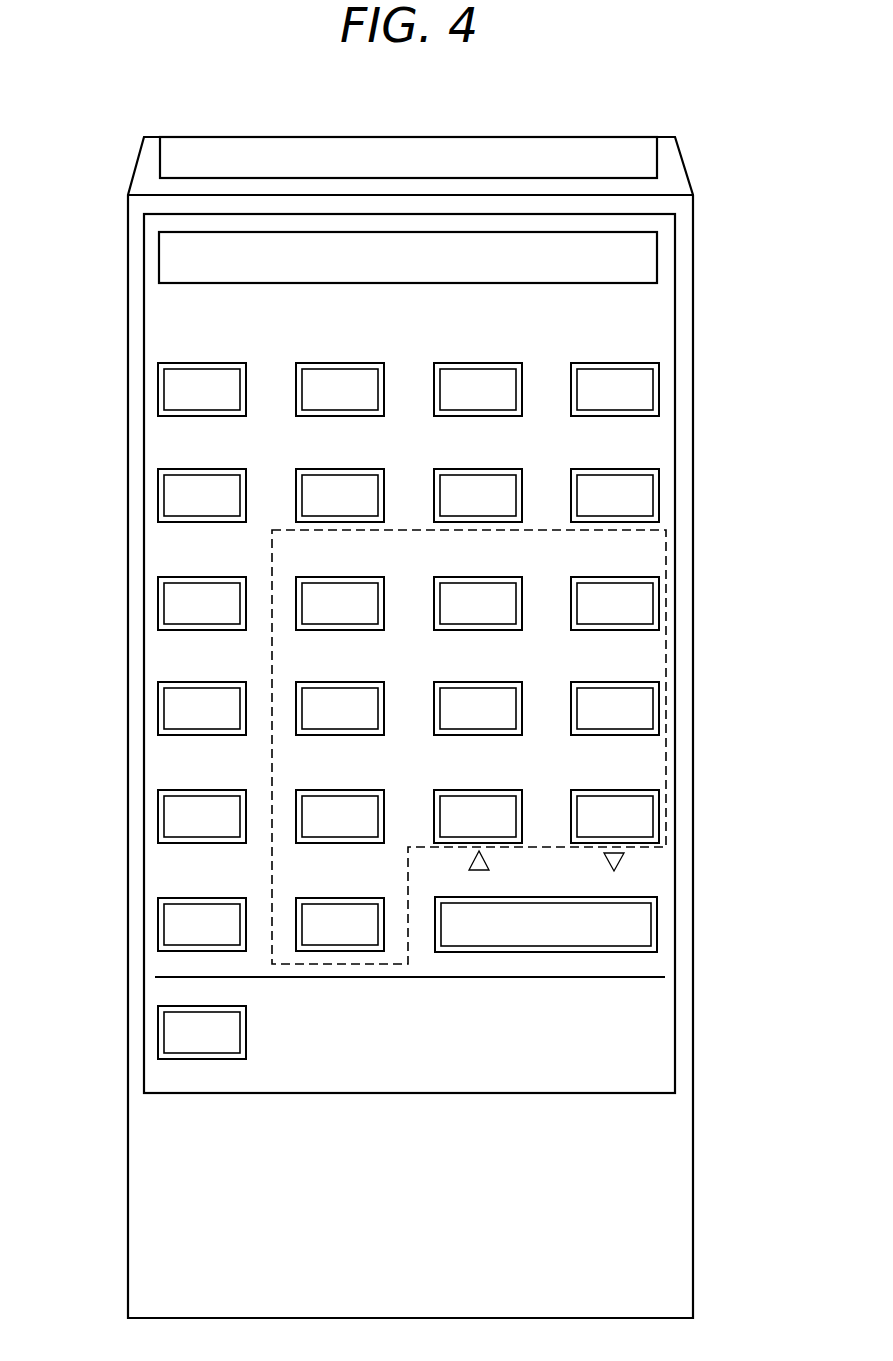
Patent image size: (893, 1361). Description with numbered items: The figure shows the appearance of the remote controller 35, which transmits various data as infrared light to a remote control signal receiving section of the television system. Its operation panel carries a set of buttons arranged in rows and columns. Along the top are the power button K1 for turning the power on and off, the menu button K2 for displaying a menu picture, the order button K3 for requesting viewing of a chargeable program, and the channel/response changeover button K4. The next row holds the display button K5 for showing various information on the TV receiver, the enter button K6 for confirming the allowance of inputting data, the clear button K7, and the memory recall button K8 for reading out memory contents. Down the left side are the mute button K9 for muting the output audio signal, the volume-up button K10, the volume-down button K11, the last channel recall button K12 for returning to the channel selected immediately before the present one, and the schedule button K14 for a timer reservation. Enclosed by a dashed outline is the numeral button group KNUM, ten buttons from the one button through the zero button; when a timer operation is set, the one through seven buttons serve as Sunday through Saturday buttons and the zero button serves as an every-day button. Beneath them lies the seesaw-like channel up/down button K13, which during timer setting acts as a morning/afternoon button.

The remote controller 35 is at (612, 137).
The power button K1 is at (158, 395).
The menu button K2 is at (384, 380).
The order button K3 is at (522, 380).
The channel/response changeover button K4 is at (659, 388).
The display button K5 is at (158, 497).
The enter button K6 is at (384, 486).
The clear button K7 is at (522, 486).
The memory recall button K8 is at (659, 493).
The mute button K9 is at (158, 604).
The volume-up button K10 is at (158, 710).
The volume-down button K11 is at (158, 818).
The last channel recall button K12 is at (158, 923).
The channel up/down button K13 is at (657, 913).
The schedule button K14 is at (158, 1036).
The numeral button group KNUM is at (666, 748).